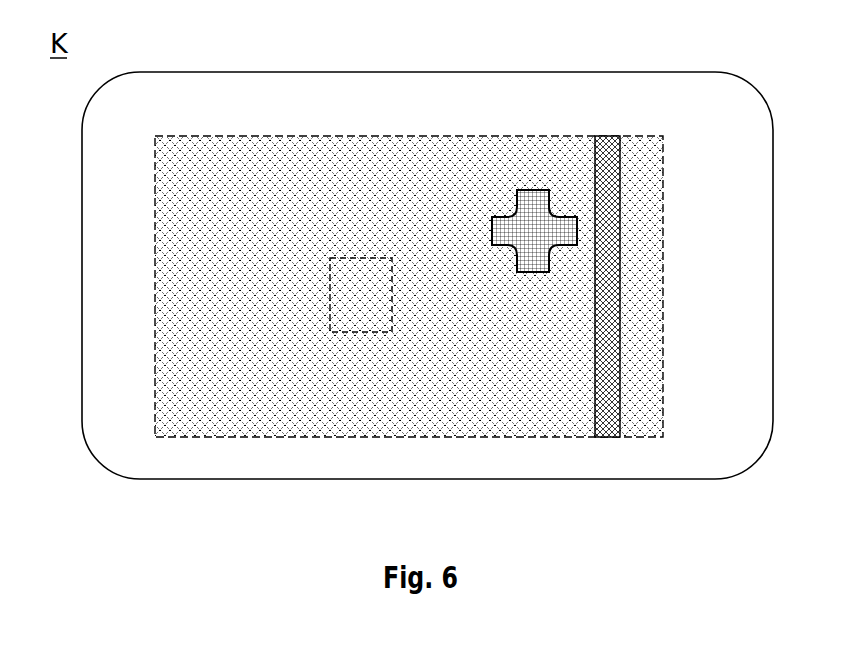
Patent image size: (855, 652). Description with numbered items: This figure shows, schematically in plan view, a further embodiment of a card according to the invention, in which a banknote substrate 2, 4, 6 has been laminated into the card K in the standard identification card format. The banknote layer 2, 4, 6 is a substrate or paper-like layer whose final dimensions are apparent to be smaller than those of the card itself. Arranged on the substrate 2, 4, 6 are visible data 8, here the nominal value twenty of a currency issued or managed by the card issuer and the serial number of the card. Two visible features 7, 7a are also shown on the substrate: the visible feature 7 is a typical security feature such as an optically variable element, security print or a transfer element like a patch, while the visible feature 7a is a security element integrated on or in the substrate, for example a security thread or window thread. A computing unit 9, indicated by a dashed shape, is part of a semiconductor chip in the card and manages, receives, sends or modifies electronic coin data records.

The banknote layer 2 is at (458, 286).
The banknote layer 4 is at (458, 286).
The banknote layer 6 is at (708, 380).
The visible feature 7 is at (535, 190).
The visible feature 7a is at (603, 172).
The visible data 8 is at (205, 192).
The computing unit 9 is at (328, 300).